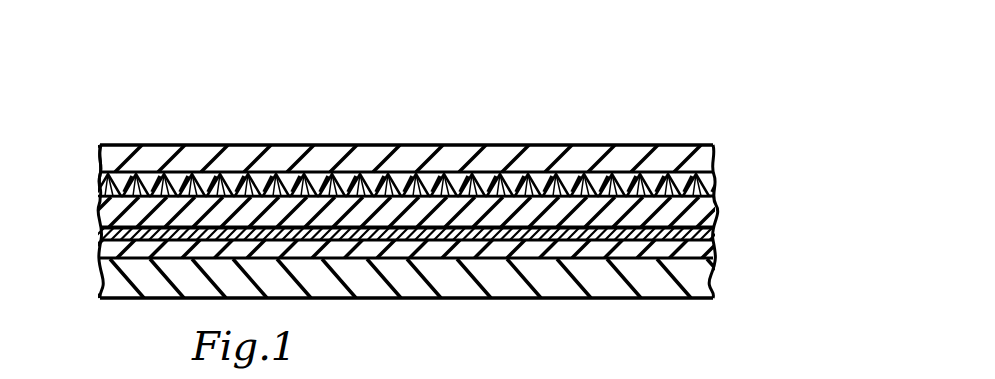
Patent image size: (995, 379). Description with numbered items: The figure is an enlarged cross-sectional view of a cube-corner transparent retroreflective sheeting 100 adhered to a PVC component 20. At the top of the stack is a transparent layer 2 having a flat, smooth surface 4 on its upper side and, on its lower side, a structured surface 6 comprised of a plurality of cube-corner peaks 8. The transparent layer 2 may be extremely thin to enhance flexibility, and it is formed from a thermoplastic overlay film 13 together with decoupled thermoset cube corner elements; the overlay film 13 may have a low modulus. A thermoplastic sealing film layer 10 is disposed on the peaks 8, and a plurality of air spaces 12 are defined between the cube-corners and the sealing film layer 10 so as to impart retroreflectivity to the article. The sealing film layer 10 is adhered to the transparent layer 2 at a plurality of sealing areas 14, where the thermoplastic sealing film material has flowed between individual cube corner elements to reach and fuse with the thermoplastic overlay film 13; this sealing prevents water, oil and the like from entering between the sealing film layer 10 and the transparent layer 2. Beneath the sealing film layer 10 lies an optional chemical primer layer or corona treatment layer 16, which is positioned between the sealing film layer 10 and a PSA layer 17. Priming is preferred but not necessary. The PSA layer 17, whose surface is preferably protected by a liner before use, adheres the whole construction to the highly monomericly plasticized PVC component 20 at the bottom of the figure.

The sheeting 100 is at (704, 79).
The transparent layer 2 is at (66, 146).
The flat, smooth surface 4 is at (146, 153).
The structured surface 6 is at (722, 172).
The peaks 8 is at (575, 176).
The thermoplastic sealing film layer 10 is at (110, 206).
The air spaces 12 is at (350, 172).
The thermoplastic overlay film 13 is at (445, 151).
The sealing areas 14 is at (288, 172).
The chemical primer layer or corona treatment layer 16 is at (716, 231).
The PSA layer 17 is at (706, 247).
The PVC component 20 is at (108, 286).